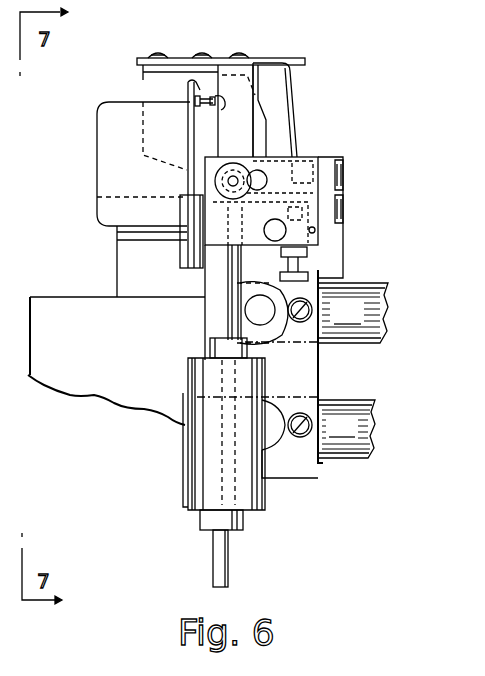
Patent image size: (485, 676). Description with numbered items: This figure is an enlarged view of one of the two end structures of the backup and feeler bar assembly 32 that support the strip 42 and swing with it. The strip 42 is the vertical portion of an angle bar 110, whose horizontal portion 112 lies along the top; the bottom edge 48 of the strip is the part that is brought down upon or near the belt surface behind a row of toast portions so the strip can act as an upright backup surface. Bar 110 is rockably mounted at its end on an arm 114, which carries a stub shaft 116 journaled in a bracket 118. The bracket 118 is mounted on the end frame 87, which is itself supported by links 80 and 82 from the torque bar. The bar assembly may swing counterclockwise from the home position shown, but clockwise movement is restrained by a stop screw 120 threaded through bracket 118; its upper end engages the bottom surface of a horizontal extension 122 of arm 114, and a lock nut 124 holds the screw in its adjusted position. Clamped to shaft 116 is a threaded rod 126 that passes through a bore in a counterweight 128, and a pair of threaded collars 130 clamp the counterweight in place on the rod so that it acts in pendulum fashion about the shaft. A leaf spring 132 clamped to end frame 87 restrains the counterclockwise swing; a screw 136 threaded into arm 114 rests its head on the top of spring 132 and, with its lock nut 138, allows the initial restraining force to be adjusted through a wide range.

The backup and feeler bar assembly 32 is at (161, 30).
The horizontal portion 112 is at (213, 58).
The arm 114 is at (238, 70).
The angle bar 110 is at (290, 61).
The strip 42 is at (292, 92).
The screw 136 is at (195, 80).
The lock nut 138 is at (225, 114).
The leaf spring 132 is at (187, 125).
The bracket 118 is at (305, 163).
The stub shaft 116 is at (230, 181).
The bottom edge 48 is at (347, 187).
The horizontal extension 122 is at (347, 210).
The lock nut 124 is at (308, 252).
The stop screw 120 is at (316, 265).
The threaded rod 126 is at (226, 312).
The threaded collar 130 is at (212, 343).
The counterweight 128 is at (196, 378).
The link 80 is at (353, 313).
The link 82 is at (346, 429).
The end frame 87 is at (312, 378).